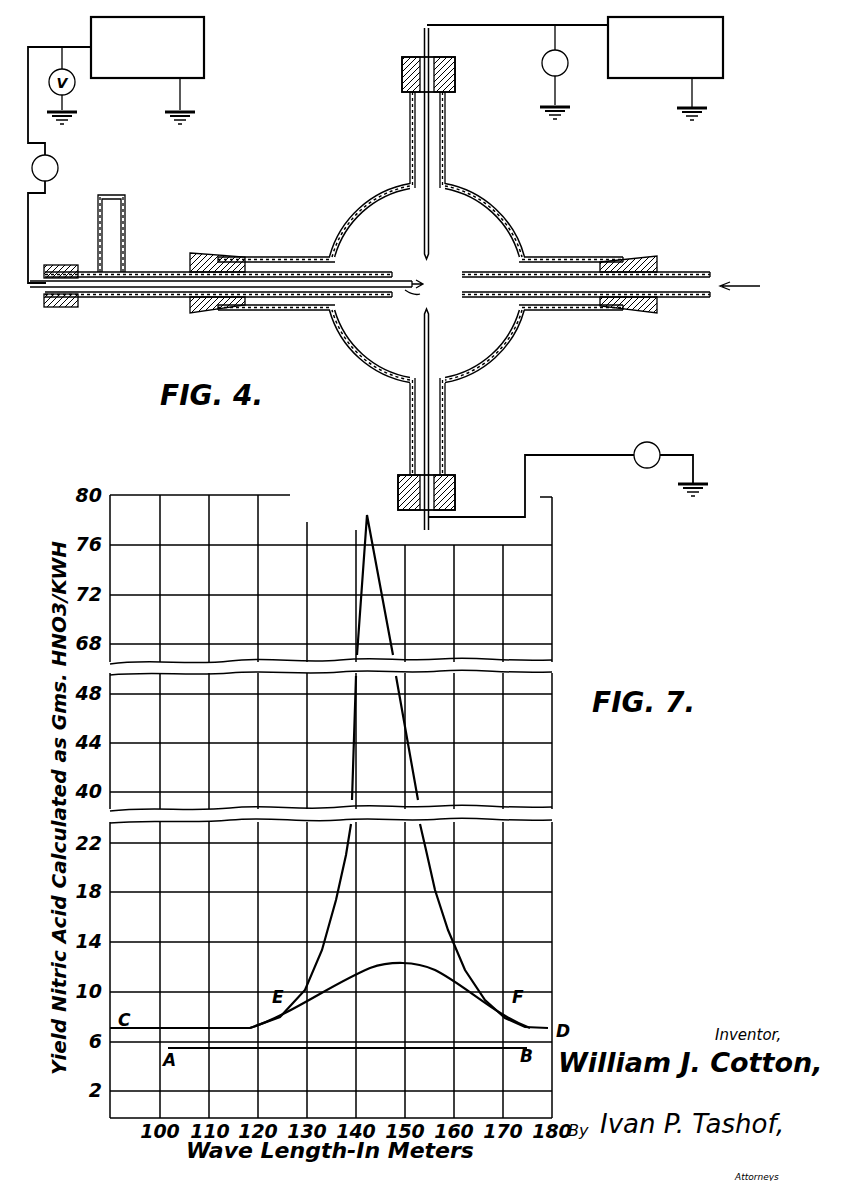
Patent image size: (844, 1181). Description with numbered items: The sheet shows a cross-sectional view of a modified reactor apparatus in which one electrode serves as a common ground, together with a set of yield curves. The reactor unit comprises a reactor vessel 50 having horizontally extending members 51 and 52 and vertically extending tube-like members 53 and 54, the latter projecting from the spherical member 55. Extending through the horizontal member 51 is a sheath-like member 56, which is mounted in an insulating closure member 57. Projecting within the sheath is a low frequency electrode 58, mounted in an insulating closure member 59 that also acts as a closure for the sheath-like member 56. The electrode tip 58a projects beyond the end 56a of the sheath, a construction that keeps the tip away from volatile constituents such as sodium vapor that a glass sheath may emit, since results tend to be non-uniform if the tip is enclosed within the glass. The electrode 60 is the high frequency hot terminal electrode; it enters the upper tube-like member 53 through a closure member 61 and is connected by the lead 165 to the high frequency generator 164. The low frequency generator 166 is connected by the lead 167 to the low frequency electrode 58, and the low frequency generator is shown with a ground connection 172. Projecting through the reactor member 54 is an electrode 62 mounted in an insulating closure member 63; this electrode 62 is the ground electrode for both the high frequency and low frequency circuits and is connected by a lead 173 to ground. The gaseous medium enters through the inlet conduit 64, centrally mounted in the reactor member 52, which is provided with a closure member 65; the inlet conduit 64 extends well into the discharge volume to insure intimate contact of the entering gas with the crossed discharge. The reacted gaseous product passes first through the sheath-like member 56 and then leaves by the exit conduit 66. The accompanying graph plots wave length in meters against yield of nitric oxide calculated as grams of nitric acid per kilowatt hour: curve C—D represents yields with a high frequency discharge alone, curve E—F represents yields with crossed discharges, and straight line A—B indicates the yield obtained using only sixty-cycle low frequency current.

The reactor vessel 50 is at (294, 250).
The horizontally extending member 51 is at (286, 309).
The horizontally extending member 52 is at (576, 258).
The vertically extending tube-like member 53 is at (447, 131).
The vertically extending tube-like member 54 is at (447, 414).
The spherical member 55 is at (499, 206).
The sheath-like member 56 is at (166, 298).
The end of the sheath 56a is at (394, 271).
The insulating closure member 57 is at (219, 311).
The low frequency electrode 58 is at (161, 272).
The electrode tip 58a is at (420, 294).
The insulating closure member 59 is at (58, 308).
The high frequency hot terminal electrode 60 is at (423, 128).
The upper plug 61 is at (455, 72).
The ground electrode 62 is at (410, 410).
The insulating closure member 63 is at (455, 481).
The inlet conduit 64 is at (696, 300).
The closure member 65 is at (651, 262).
The exit conduit 66 is at (124, 216).
The high frequency generator 164 is at (636, 78).
The lead 165 is at (490, 27).
The low frequency generator 166 is at (205, 41).
The lead 167 is at (30, 209).
The ground connection 172 is at (178, 92).
The lead 173 is at (586, 455).